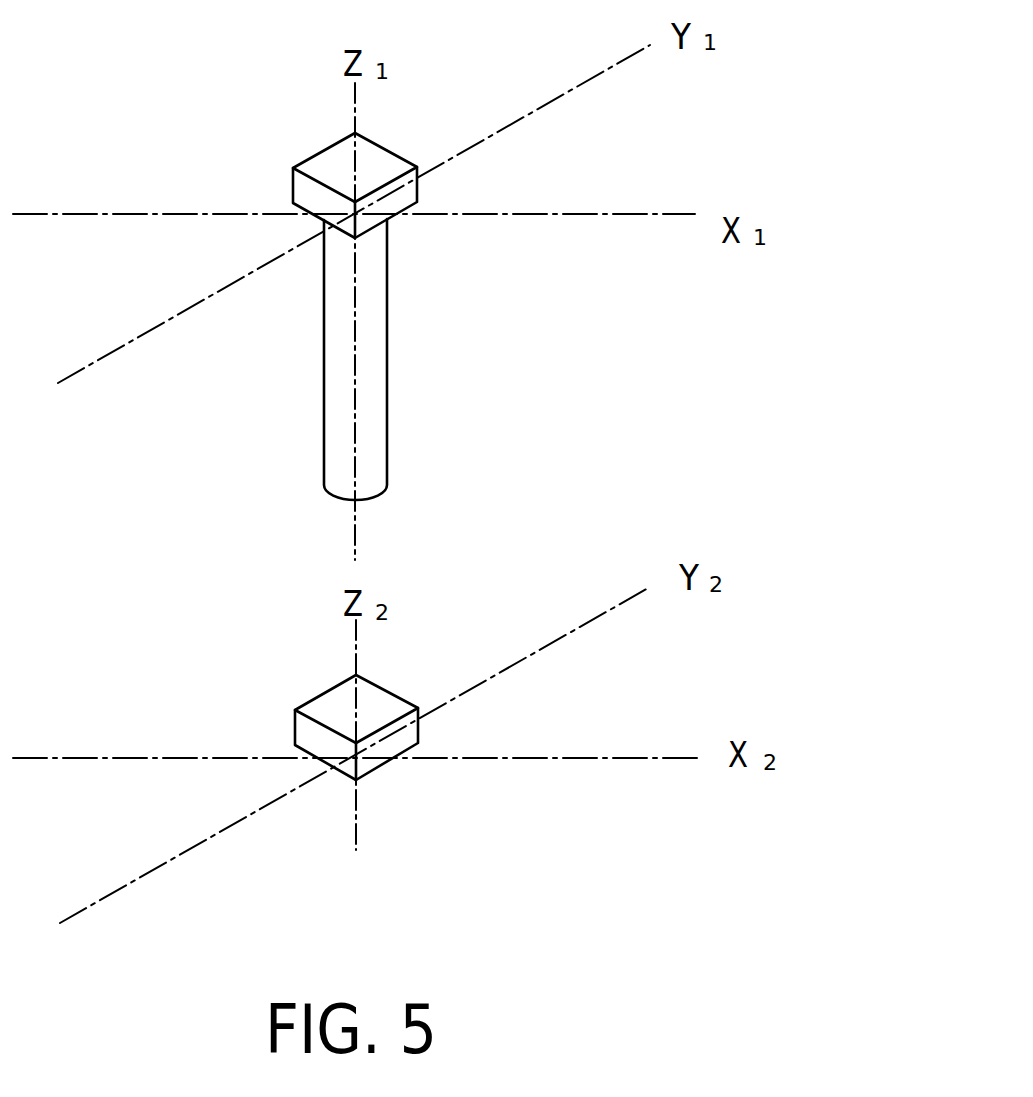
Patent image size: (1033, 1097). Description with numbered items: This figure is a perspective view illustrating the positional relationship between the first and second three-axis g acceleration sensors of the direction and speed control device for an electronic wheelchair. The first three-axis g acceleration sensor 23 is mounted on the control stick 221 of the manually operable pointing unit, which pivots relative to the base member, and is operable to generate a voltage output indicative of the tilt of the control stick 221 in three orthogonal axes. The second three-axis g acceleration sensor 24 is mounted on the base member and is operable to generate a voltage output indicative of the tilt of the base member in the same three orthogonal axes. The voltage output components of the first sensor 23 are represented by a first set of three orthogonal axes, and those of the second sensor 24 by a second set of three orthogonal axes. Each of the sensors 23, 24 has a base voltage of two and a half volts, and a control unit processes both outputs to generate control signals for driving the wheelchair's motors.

The first three-axis g acceleration sensor 23 is at (312, 168).
The control stick 221 is at (337, 440).
The second three-axis g acceleration sensor 24 is at (315, 707).